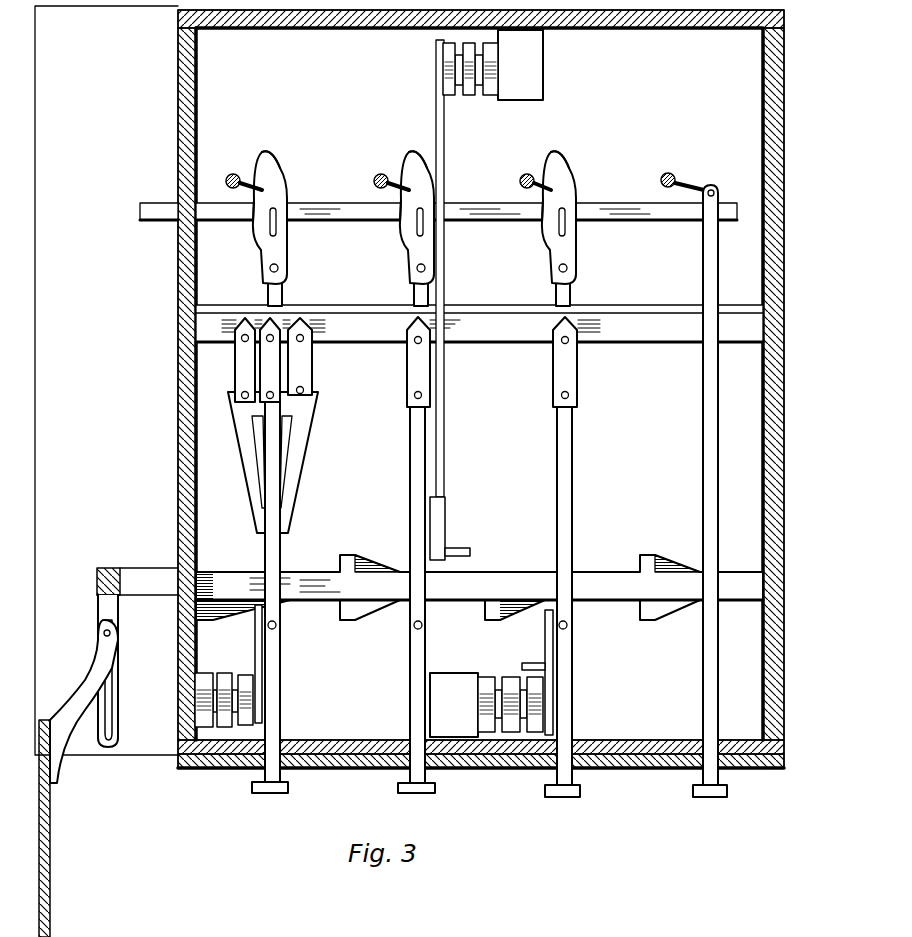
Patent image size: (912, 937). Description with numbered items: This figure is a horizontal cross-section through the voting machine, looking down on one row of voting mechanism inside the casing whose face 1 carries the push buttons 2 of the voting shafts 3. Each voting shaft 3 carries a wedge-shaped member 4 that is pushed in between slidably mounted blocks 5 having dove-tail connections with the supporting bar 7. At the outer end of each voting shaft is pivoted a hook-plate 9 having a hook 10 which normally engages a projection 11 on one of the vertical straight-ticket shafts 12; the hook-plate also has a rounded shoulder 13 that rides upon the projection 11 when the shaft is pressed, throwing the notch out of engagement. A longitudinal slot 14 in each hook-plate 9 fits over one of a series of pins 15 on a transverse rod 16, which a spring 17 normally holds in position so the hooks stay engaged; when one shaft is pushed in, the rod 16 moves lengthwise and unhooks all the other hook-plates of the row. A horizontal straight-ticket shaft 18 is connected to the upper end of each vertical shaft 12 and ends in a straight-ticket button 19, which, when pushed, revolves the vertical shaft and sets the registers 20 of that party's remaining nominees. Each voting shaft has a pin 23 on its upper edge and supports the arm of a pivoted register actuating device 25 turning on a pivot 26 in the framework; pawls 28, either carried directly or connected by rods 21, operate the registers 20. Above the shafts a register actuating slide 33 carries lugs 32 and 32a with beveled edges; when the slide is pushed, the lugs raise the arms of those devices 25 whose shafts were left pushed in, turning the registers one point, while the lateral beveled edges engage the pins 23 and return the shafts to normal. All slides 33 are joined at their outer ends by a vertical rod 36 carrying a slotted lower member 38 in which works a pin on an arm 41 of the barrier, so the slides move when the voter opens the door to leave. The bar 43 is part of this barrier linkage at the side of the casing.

The face of the machine 1 is at (362, 767).
The push buttons 2 is at (416, 615).
The voting shafts 3 is at (333, 653).
The wedge-shaped member 4 is at (312, 370).
The slidably mounted blocks 5 is at (290, 322).
The supporting bar 7 is at (512, 305).
The hook-plate 9 is at (292, 250).
The hook 10 is at (265, 165).
The projection 11 is at (278, 188).
The vertical straight-ticket shafts 12 is at (233, 174).
The rounded shoulder 13 is at (260, 232).
The longitudinal slot 14 is at (280, 230).
The pins 15 is at (560, 212).
The transverse rod 16 is at (648, 210).
The spring 17 is at (190, 219).
The horizontal straight-ticket shaft 18 is at (706, 437).
The straight-ticket button 19 is at (697, 800).
The registers 20 is at (375, 383).
The rods 21 is at (443, 147).
The pin 23 is at (276, 625).
The register actuating device 25 is at (437, 512).
The pivot 26 is at (467, 540).
The pawls 28 is at (440, 72).
The lug 32 is at (479, 587).
The lug 32a is at (663, 540).
The register actuating slides 33 is at (525, 563).
The vertical rod 36 is at (113, 565).
The slotted lower member 38 is at (100, 610).
The arm 41 is at (137, 615).
The bar 43 is at (50, 833).